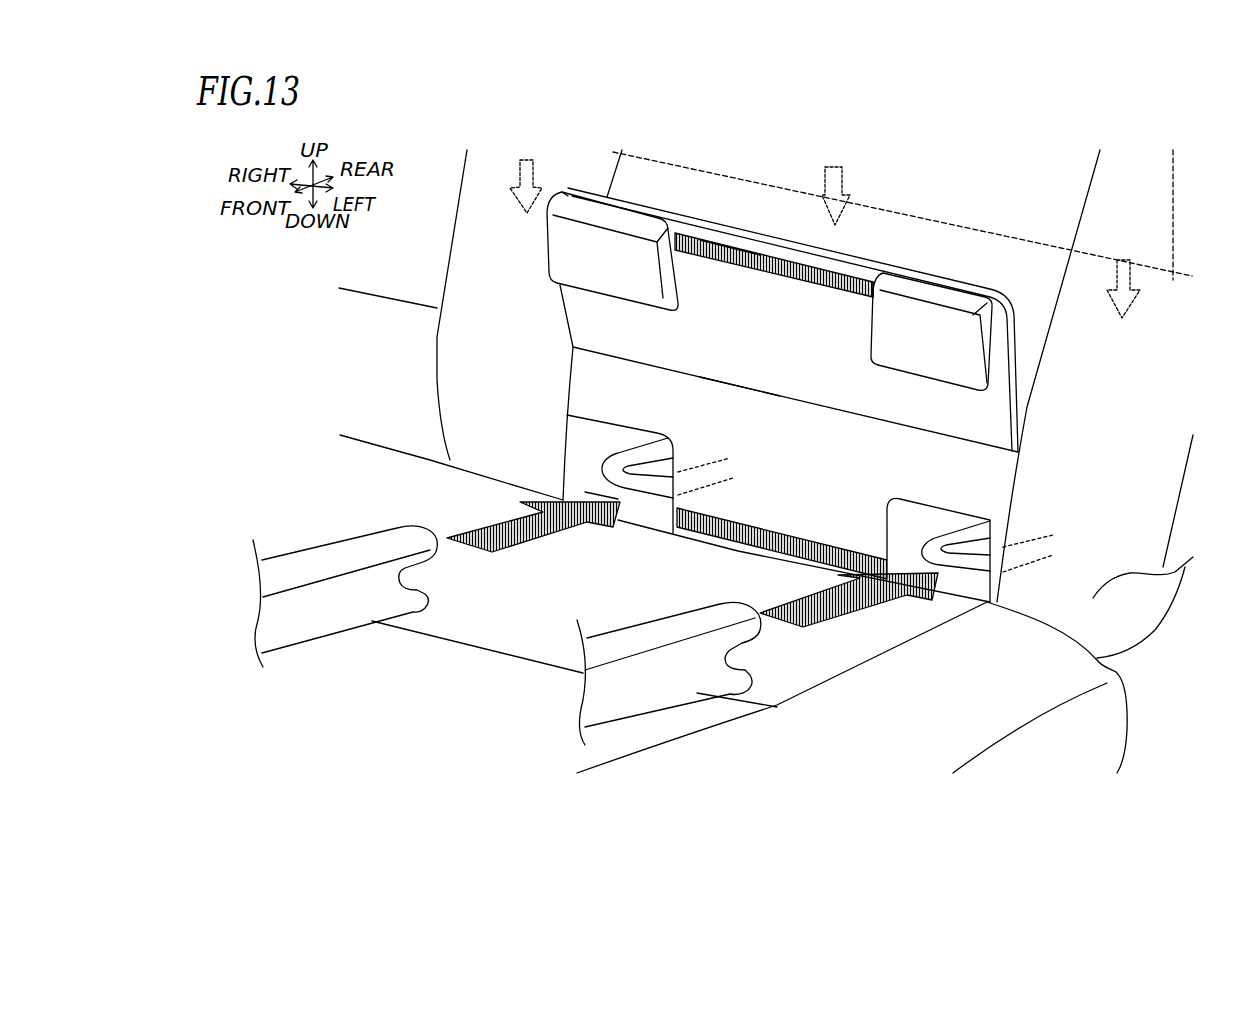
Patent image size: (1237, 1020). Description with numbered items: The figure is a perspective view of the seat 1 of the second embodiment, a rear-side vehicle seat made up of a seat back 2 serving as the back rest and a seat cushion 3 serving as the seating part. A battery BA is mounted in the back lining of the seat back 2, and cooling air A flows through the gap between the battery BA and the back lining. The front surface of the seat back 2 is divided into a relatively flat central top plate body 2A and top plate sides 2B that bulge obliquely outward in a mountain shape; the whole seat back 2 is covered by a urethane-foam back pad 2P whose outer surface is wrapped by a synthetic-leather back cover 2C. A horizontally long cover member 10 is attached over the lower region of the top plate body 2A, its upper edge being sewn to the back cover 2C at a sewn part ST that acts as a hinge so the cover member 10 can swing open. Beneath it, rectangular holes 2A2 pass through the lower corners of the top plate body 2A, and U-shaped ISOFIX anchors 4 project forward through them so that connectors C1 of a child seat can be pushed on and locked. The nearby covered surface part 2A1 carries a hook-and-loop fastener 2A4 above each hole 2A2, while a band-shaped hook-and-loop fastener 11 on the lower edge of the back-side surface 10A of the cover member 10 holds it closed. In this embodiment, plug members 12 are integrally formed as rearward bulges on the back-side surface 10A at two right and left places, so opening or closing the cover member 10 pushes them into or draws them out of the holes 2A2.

The seat 1 is at (297, 373).
The seat back 2 is at (1165, 482).
The top plate body 2A is at (810, 226).
The covered surface part 2A1 is at (752, 503).
The hole 2A2 is at (579, 455).
The hook-and-loop fastener 2A4 is at (792, 540).
The top plate side 2B is at (502, 244).
The back cover 2C is at (1143, 502).
The back pad 2P is at (1142, 525).
The seat cushion 3 is at (1106, 744).
The ISOFIX anchor 4 is at (635, 458).
The cover member 10 is at (700, 222).
The back-side surface 10A is at (847, 320).
The hook-and-loop fastener 11 is at (760, 258).
The plug member 12 is at (568, 268).
The cooling air A is at (520, 160).
The battery BA is at (1045, 235).
The connector C1 is at (320, 557).
The sewn part ST is at (773, 397).